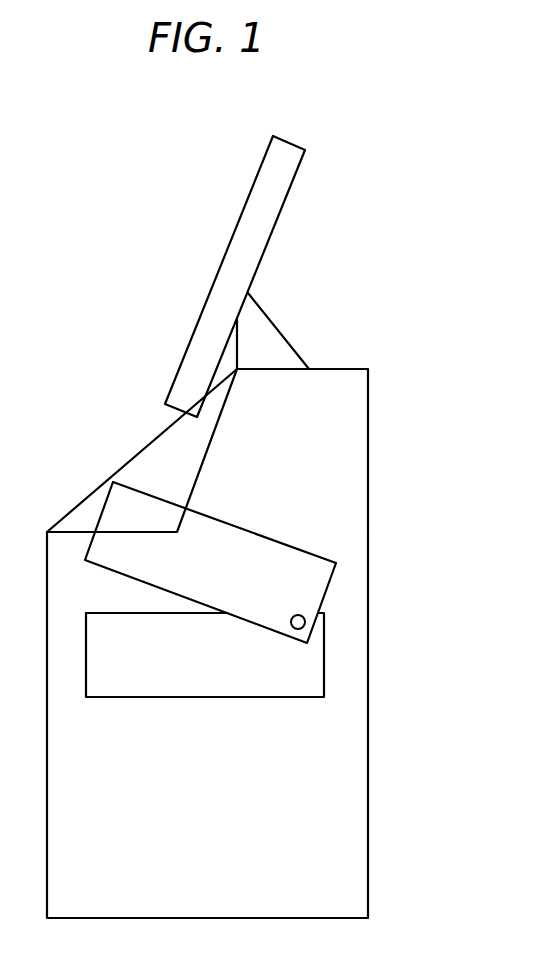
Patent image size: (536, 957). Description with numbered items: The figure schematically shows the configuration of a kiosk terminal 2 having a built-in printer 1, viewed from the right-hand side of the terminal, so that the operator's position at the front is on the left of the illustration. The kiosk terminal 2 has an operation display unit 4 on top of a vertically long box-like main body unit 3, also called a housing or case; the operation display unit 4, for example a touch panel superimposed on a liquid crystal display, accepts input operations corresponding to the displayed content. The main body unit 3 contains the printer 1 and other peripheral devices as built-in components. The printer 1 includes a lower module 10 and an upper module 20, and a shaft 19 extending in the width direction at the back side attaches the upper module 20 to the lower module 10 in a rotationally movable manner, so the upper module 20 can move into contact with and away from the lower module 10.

The printer 1 is at (281, 531).
The kiosk terminal 2 is at (120, 204).
The main body unit 3 is at (368, 435).
The operation display unit 4 is at (276, 223).
The lower module 10 is at (312, 680).
The shaft 19 is at (305, 622).
The upper module 20 is at (315, 575).